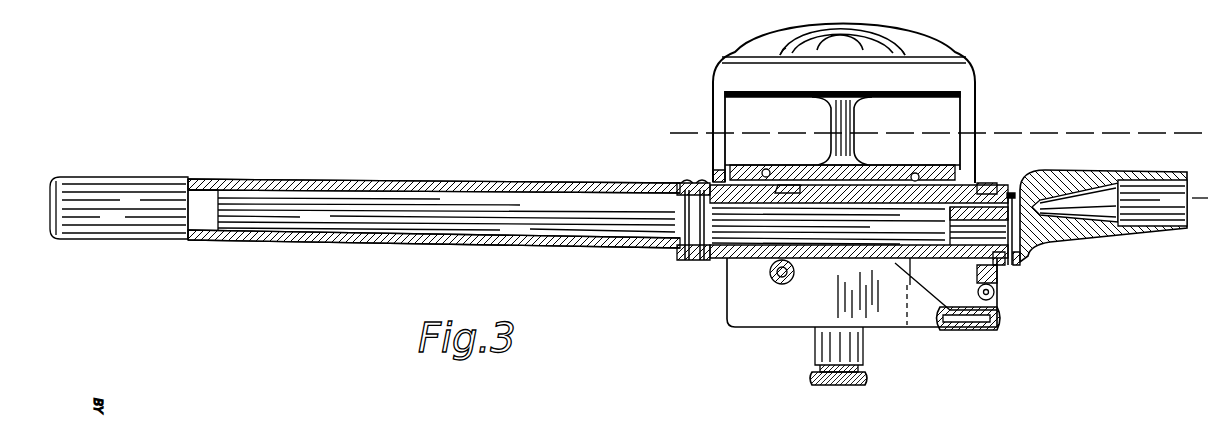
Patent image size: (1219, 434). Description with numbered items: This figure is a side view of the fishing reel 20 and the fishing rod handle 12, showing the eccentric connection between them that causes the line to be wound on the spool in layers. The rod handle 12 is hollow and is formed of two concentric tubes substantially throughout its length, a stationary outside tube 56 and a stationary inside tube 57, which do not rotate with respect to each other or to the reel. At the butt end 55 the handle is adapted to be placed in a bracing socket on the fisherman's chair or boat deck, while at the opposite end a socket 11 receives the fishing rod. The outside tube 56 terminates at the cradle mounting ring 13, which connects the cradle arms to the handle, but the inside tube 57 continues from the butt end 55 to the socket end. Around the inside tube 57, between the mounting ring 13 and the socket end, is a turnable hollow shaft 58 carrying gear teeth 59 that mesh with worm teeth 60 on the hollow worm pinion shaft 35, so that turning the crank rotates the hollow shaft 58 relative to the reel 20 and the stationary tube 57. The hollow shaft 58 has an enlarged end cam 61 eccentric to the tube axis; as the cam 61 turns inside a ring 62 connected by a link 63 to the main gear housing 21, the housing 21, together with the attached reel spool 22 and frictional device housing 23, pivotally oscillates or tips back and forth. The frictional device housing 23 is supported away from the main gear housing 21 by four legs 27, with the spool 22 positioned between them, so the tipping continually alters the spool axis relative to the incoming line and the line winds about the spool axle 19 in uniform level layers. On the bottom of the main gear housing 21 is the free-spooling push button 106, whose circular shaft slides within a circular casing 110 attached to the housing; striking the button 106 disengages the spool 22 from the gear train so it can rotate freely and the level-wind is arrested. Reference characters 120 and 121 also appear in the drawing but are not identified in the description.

The socket 11 is at (1172, 180).
The fishing rod handle 12 is at (295, 179).
The cradle mounting ring 13 is at (688, 262).
The spool axle 19 is at (826, 116).
The fishing reel 20 is at (978, 92).
The main gear housing 21 is at (890, 322).
The reel spool 22 is at (902, 98).
The frictional device housing 23 is at (915, 36).
The legs 27 is at (712, 107).
The worm pinion shaft 35 is at (778, 284).
The butt end 55 is at (104, 177).
The stationary outside tube 56 is at (444, 182).
The stationary inside tube 57 is at (556, 198).
The turnable hollow shaft 58 is at (718, 260).
The gear teeth 59 is at (786, 185).
The worm teeth 60 is at (794, 276).
The end cam 61 is at (1010, 193).
The ring 62 is at (990, 183).
The link 63 is at (1003, 312).
The push button 106 is at (862, 381).
The circular casing 110 is at (815, 348).
The axis centerline 120 is at (1105, 133).
The handle end 121 is at (1196, 198).